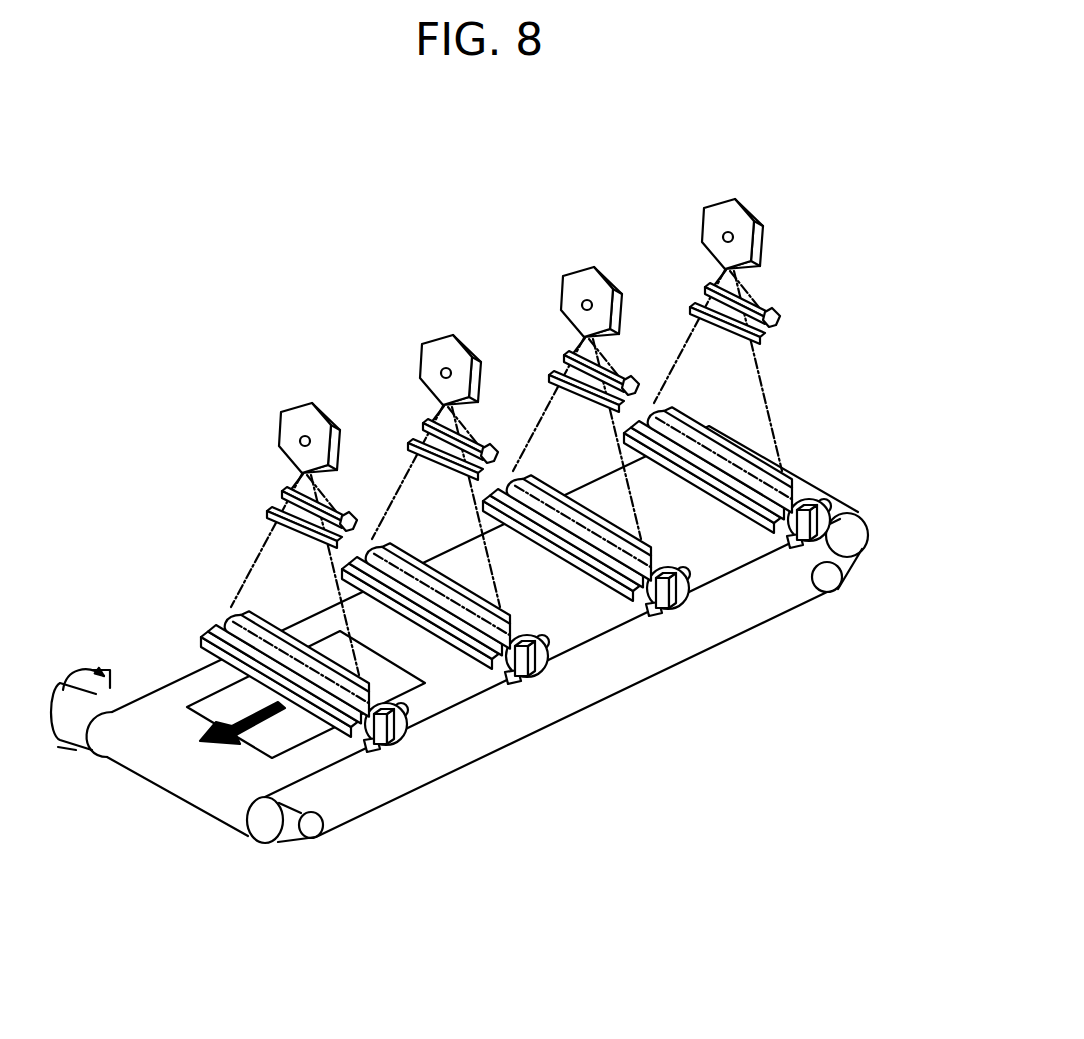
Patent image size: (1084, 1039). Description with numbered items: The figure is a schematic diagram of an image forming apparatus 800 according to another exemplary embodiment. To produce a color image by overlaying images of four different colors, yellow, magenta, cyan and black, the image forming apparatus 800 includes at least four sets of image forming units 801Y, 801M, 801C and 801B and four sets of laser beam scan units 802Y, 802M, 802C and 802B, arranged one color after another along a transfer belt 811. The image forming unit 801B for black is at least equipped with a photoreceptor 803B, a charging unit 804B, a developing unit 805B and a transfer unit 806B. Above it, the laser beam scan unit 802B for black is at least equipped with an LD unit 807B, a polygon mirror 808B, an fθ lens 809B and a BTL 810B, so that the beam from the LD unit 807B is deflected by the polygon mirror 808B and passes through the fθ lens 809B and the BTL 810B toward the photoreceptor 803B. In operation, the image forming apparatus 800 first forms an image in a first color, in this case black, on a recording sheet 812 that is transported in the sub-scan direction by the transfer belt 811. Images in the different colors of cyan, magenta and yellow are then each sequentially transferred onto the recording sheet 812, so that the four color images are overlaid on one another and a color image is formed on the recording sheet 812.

The image forming apparatus 800 is at (300, 240).
The image forming unit 801Y is at (281, 662).
The image forming unit 801M is at (444, 581).
The image forming unit 801C is at (586, 512).
The image forming unit 801B is at (738, 525).
The laser beam scan unit 802Y is at (285, 513).
The laser beam scan unit 802M is at (426, 446).
The laser beam scan unit 802C is at (564, 375).
The laser beam scan unit 802B is at (712, 309).
The photoreceptor 803B is at (752, 440).
The charging unit 804B is at (704, 564).
The developing unit 805B is at (866, 533).
The transfer unit 806B is at (797, 570).
The LD unit 807B is at (802, 301).
The polygon mirror 808B is at (677, 216).
The fθ lens 809B is at (676, 266).
The BTL 810B is at (674, 293).
The transfer belt 811 is at (565, 690).
The recording sheet 812 is at (293, 732).